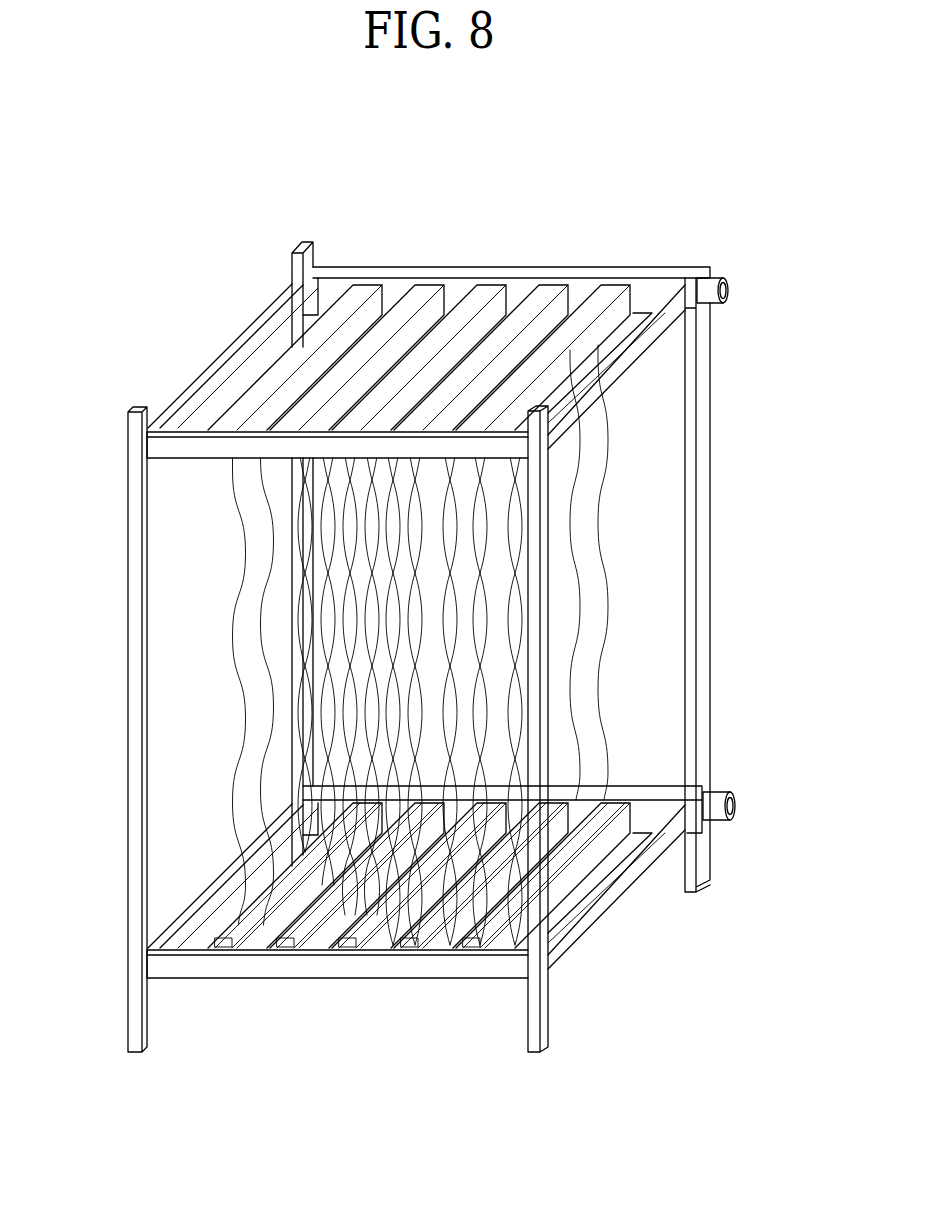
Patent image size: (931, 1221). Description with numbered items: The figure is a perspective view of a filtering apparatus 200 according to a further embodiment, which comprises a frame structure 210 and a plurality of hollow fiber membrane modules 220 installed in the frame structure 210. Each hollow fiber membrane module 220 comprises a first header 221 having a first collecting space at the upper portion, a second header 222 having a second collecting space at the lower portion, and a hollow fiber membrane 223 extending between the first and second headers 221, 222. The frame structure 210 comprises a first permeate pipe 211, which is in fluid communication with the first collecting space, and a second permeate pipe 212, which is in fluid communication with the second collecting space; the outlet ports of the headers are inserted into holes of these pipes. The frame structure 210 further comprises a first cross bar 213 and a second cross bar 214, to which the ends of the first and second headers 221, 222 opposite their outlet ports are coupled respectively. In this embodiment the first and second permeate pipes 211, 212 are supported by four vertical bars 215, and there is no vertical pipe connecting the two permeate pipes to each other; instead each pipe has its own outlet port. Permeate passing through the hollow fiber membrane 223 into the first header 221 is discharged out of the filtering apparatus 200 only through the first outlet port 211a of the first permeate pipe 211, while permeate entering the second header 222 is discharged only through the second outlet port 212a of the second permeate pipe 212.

The filtering apparatus 200 is at (608, 211).
The frame structure 210 is at (121, 406).
The first permeate pipe 211 is at (520, 268).
The first outlet port 211a is at (712, 285).
The second permeate pipe 212 is at (650, 812).
The second outlet port 212a is at (717, 798).
The first cross bar 213 is at (172, 443).
The second cross bar 214 is at (245, 965).
The vertical bar 215 is at (290, 268).
The hollow fiber membrane module 220 is at (368, 291).
The first header 221 is at (245, 405).
The second header 222 is at (378, 943).
The hollow fiber membrane 223 is at (234, 600).